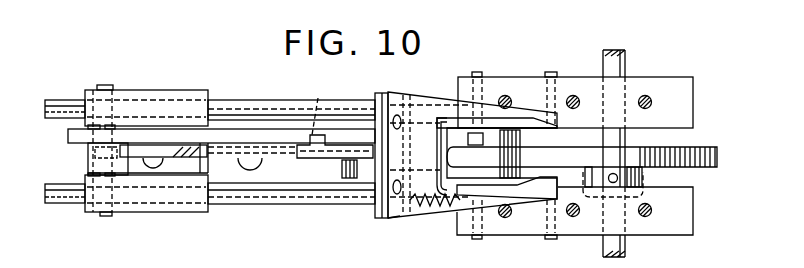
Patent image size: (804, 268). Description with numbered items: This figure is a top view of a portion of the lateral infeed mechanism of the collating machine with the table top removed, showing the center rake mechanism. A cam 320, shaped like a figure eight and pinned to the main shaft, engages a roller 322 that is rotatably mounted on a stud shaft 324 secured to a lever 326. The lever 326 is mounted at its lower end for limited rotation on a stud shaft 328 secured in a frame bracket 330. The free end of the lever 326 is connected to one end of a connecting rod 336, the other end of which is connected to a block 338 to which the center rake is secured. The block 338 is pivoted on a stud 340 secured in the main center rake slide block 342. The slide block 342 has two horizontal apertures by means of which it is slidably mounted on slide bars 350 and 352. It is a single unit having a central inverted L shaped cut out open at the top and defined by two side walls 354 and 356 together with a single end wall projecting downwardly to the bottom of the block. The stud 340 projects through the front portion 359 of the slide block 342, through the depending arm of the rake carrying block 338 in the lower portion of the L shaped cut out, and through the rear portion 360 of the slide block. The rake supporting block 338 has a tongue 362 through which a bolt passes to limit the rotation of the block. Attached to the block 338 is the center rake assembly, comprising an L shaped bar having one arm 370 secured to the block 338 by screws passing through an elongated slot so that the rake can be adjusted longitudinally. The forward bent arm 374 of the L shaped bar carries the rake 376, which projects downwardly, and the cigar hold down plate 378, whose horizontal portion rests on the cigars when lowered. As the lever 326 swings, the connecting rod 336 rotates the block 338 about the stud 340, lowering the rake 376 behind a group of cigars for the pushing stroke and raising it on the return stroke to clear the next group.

The cam 320 is at (703, 147).
The roller 322 is at (462, 150).
The stud shaft 324 is at (482, 133).
The lever 326 is at (355, 172).
The stud shaft 328 is at (502, 75).
The frame bracket 330 is at (680, 82).
The connecting rod 336 is at (328, 107).
The block 338 is at (230, 135).
The stud 340 is at (103, 216).
The slide block 342 is at (145, 89).
The slide bar 350 is at (268, 106).
The slide bar 352 is at (288, 205).
The side wall 354 is at (147, 123).
The side wall 356 is at (167, 177).
The front portion 359 is at (88, 204).
The rear portion 360 is at (92, 92).
The tongue 362 is at (90, 162).
The arm 370 is at (282, 162).
The forward bent arm 374 is at (376, 96).
The rake 376 is at (384, 97).
The cigar hold down plate 378 is at (393, 216).